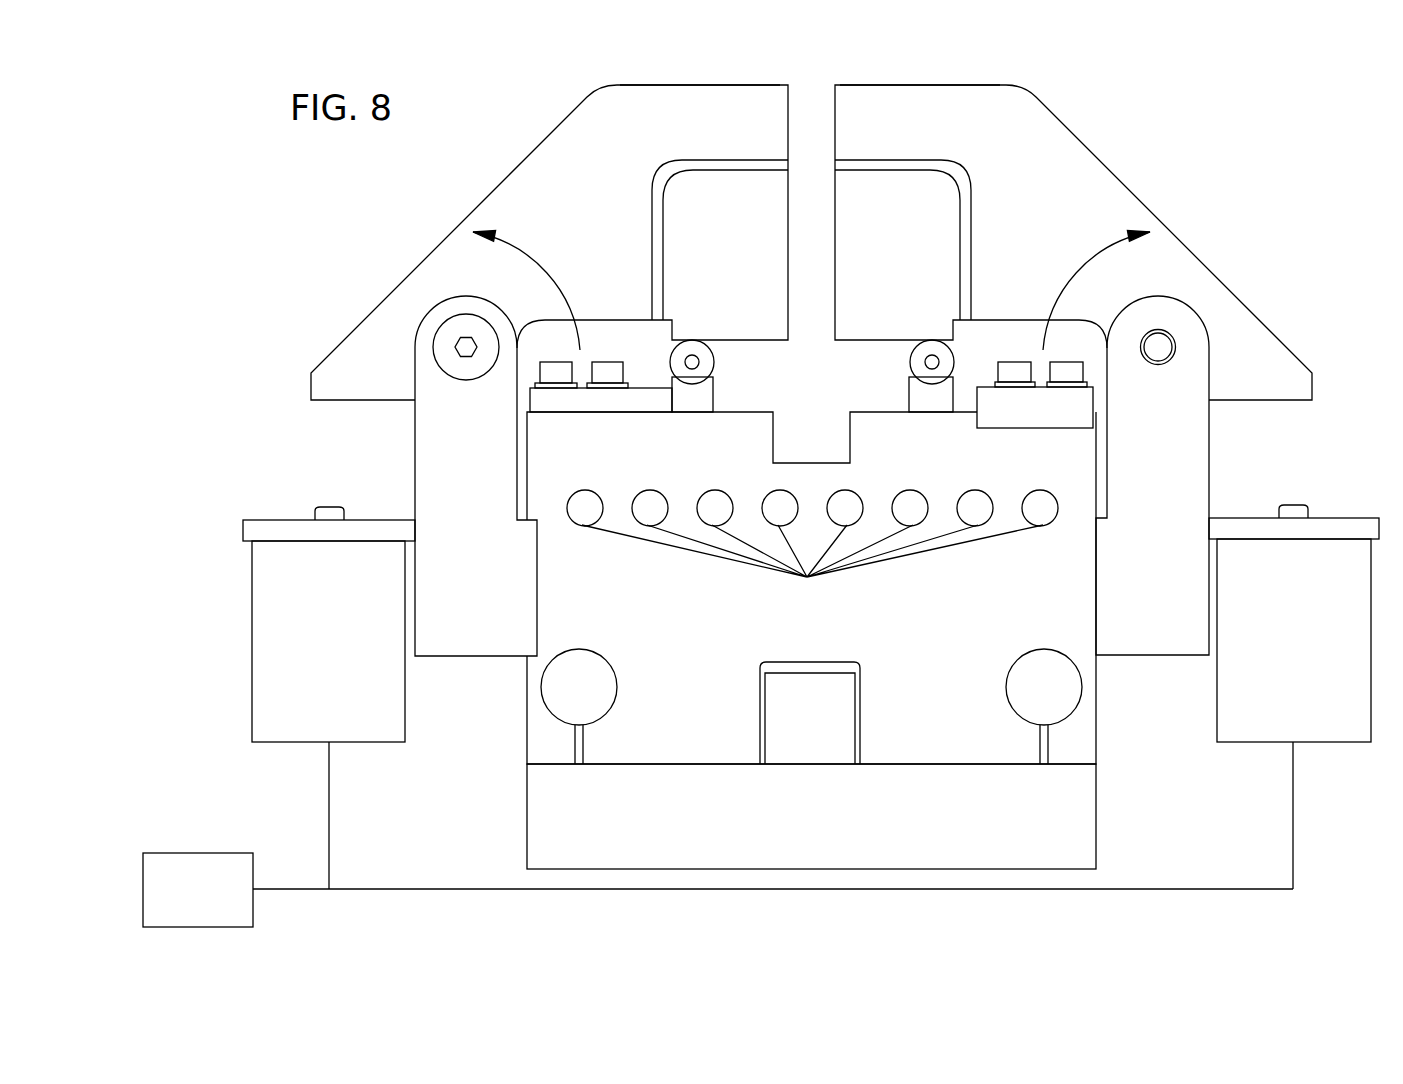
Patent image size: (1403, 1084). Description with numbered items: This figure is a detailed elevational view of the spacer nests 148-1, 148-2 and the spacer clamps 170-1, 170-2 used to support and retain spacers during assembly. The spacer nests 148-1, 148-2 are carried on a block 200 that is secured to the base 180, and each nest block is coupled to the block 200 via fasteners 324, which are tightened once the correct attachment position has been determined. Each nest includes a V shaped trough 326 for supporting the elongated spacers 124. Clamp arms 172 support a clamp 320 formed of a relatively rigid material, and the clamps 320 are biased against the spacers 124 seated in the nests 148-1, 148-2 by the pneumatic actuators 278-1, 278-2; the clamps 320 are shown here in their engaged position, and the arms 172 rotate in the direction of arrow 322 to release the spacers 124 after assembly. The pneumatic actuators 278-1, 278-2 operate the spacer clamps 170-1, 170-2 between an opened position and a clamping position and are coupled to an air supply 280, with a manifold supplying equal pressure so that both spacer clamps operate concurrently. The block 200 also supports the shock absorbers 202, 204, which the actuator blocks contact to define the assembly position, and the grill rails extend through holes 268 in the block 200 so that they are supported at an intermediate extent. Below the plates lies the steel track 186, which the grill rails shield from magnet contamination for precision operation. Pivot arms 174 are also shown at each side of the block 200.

The spacer clamp 170-1 is at (372, 278).
The spacer clamp 170-2 is at (1238, 262).
The clamp arm 172 is at (623, 137).
The clamp 320 is at (752, 228).
The arrow 322 is at (560, 278).
The fasteners 324 is at (612, 363).
The spacers 124 is at (700, 360).
The V shaped trough 326 is at (693, 383).
The spacer nest 148-1 is at (672, 398).
The spacer nest 148-2 is at (967, 398).
The pivot arm 174 is at (487, 459).
The block 200 is at (828, 648).
The holes 268 is at (812, 549).
The track 186 is at (832, 728).
The shock absorber 202 is at (575, 655).
The shock absorber 204 is at (1020, 658).
The base 180 is at (1039, 824).
The pneumatic actuator 278-1 is at (369, 664).
The pneumatic actuator 278-2 is at (1340, 661).
The air supply 280 is at (199, 854).